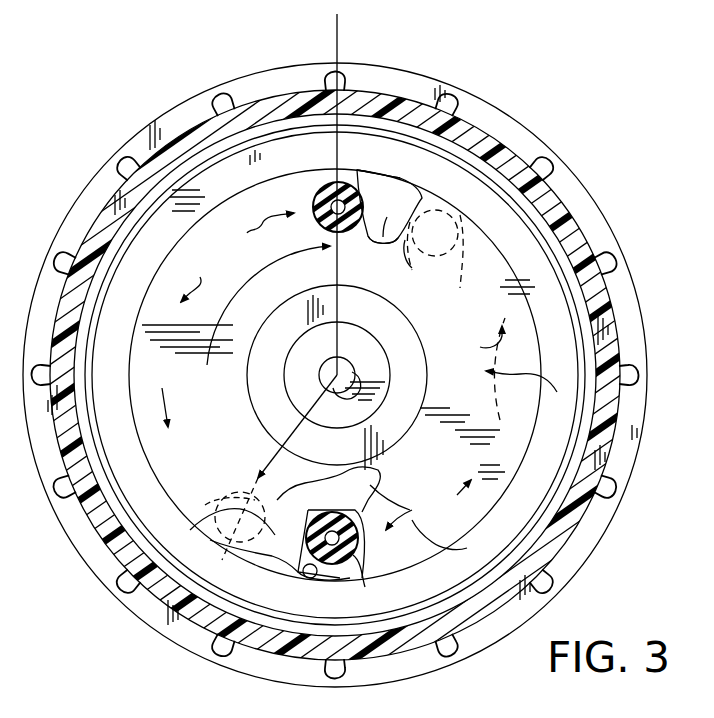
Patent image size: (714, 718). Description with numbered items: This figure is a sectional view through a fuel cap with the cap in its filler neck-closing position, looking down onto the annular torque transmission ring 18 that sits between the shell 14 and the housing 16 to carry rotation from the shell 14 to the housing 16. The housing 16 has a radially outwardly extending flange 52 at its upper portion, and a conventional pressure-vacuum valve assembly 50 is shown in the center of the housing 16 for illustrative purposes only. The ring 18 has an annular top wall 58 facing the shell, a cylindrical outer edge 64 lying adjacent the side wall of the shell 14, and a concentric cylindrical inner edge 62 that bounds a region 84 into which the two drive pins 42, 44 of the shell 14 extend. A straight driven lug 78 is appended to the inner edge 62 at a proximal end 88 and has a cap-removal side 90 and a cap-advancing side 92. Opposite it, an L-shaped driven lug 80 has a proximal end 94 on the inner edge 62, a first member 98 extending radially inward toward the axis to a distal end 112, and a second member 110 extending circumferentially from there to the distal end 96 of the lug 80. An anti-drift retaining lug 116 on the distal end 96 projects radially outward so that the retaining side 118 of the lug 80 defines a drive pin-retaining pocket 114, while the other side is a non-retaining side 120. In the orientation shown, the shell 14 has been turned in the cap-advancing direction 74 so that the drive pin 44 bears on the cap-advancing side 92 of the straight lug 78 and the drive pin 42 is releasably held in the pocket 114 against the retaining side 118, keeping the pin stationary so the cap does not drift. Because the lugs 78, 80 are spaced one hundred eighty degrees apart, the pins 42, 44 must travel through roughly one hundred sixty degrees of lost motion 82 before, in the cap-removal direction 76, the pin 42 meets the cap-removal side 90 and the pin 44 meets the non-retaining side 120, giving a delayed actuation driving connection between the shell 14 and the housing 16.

The shell 14 is at (565, 518).
The housing 16 is at (588, 300).
The annular torque transmission ring 18 is at (562, 442).
The drive pin 42 is at (372, 590).
The drive pin 44 is at (330, 182).
The pressure-vacuum valve assembly 50 is at (385, 385).
The flange 52 is at (312, 116).
The annular top wall 58 is at (535, 243).
The cylindrical inner edge 62 is at (280, 175).
The cylindrical outer edge 64 is at (212, 158).
The cap-advancing direction 74 is at (248, 240).
The cap-removal direction 76 is at (341, 305).
The straight driven lug 78 is at (374, 240).
The L-shaped driven lug 80 is at (228, 548).
The lost motion 82 is at (186, 426).
The region 84 is at (533, 369).
The proximal end 88 is at (416, 200).
The cap-removal side 90 is at (422, 270).
The cap-advancing side 92 is at (362, 166).
The proximal end 94 is at (272, 556).
The distal end 96 is at (410, 510).
The first member 98 is at (279, 467).
The second member 110 is at (378, 488).
The distal end 112 is at (352, 476).
The drive pin-retaining pocket 114 is at (328, 576).
The anti-drift retaining lug 116 is at (402, 540).
The retaining side 118 is at (309, 578).
The non-retaining side 120 is at (205, 505).